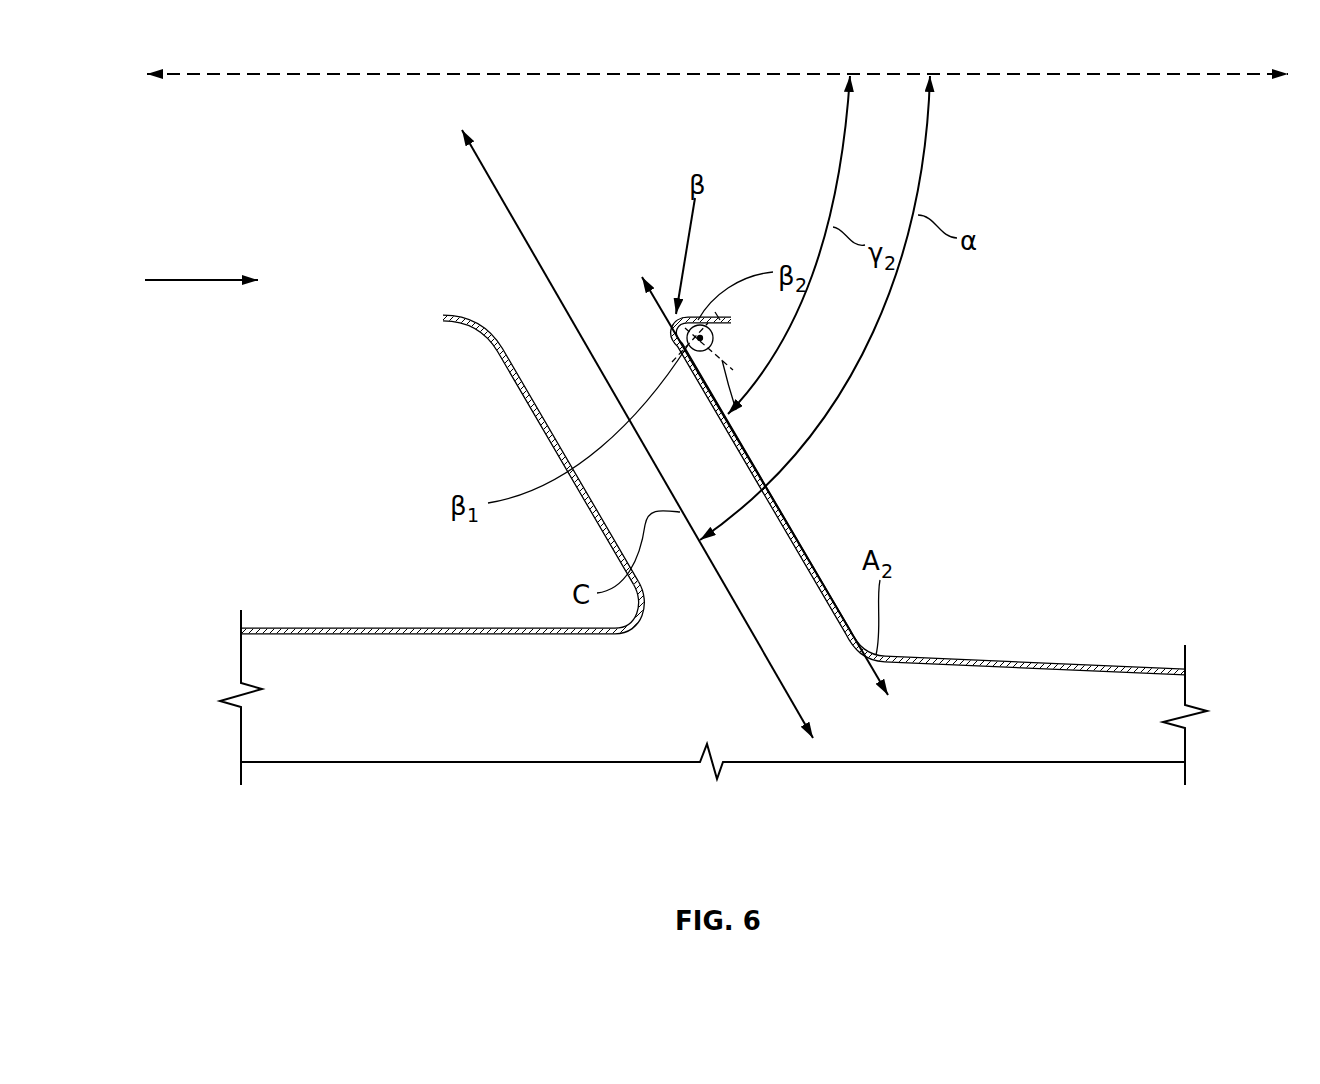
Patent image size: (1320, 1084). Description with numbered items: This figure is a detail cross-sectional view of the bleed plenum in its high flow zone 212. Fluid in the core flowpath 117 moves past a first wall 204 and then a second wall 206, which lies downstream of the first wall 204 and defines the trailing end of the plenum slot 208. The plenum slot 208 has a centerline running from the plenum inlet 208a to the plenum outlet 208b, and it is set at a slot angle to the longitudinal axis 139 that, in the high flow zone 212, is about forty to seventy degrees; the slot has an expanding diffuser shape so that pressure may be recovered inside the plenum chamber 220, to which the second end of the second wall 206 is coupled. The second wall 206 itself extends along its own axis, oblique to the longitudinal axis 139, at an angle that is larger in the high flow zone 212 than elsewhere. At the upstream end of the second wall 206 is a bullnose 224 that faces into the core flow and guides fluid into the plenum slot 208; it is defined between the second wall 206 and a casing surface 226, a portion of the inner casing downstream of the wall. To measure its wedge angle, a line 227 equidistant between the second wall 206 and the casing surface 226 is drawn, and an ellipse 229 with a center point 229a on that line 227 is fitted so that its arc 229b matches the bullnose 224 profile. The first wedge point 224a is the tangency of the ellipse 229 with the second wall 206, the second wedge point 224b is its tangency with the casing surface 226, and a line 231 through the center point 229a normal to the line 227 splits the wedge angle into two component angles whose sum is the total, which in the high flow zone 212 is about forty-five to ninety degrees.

The core flowpath 117 is at (183, 280).
The longitudinal axis 139 is at (1136, 76).
The first wall 204 is at (463, 407).
The second wall 206 is at (929, 490).
The plenum slot 208 is at (466, 429).
The plenum inlet 208a is at (528, 323).
The plenum outlet 208b is at (690, 660).
The high flow zone 212 is at (327, 182).
The plenum chamber 220 is at (713, 697).
The bullnose 224 is at (667, 323).
The first wedge point 224a is at (680, 338).
The second wedge point 224b is at (698, 320).
The casing surface 226 is at (732, 323).
The line 227 is at (734, 413).
The ellipse 229 is at (712, 346).
The center point 229a is at (694, 356).
The arc 229b is at (691, 318).
The line 231 is at (714, 338).